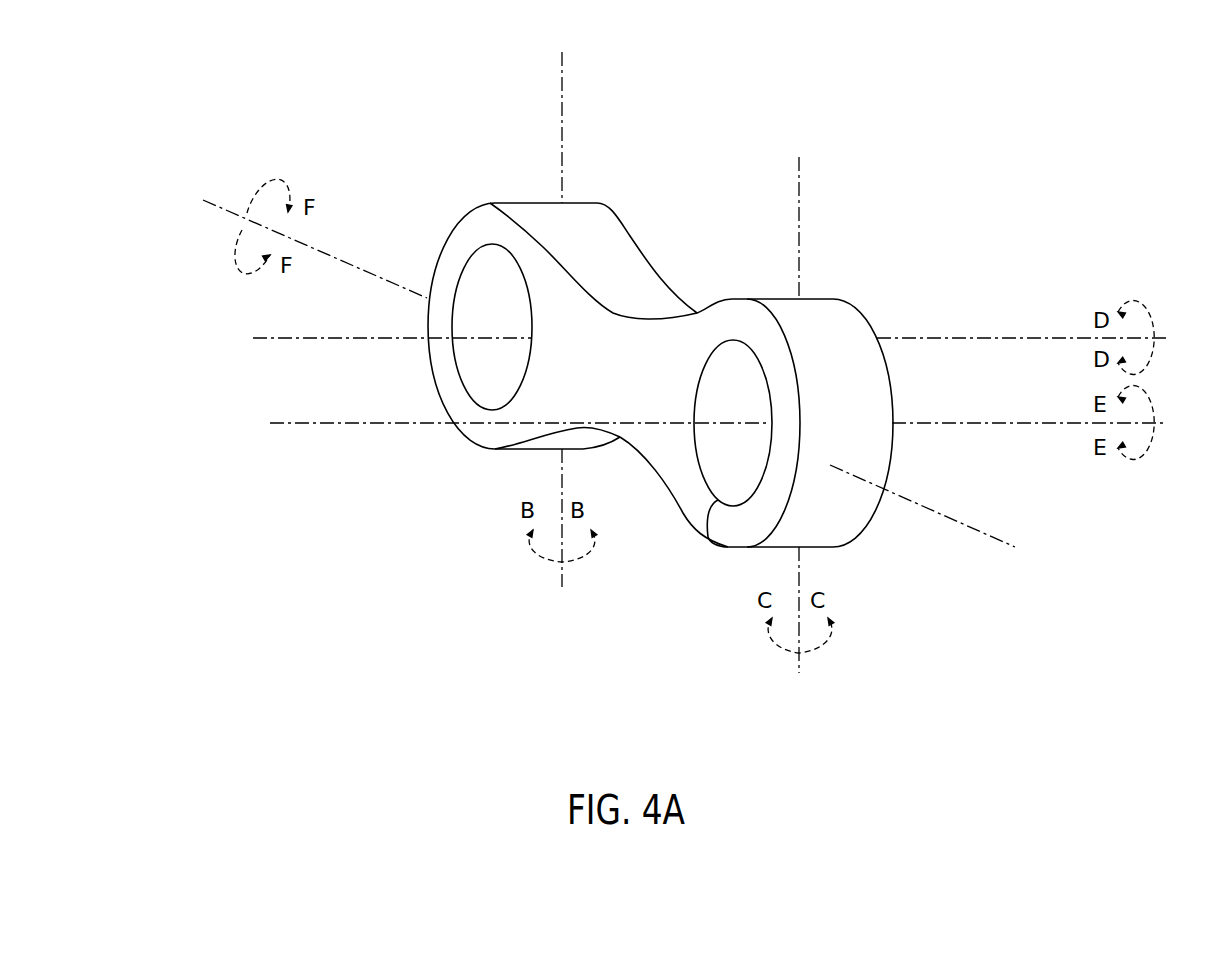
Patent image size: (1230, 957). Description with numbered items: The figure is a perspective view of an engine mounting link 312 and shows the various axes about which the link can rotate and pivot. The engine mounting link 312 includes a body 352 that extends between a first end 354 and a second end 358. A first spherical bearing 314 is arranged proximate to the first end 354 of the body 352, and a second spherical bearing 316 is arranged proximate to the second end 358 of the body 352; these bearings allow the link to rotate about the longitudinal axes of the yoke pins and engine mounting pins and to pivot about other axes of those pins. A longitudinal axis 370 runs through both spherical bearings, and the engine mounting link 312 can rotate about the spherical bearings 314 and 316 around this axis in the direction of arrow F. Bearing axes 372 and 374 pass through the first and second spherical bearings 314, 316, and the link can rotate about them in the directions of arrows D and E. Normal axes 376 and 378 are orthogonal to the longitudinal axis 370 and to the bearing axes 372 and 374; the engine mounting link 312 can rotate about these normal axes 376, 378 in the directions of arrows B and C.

The engine mounting link 312 is at (631, 198).
The first spherical bearing 314 is at (533, 325).
The second spherical bearing 316 is at (707, 537).
The body 352 is at (648, 293).
The first end 354 is at (437, 267).
The second end 358 is at (868, 450).
The longitudinal axis 370 is at (618, 373).
The bearing axis 372 is at (711, 337).
The bearing axis 374 is at (716, 422).
The normal axis 376 is at (561, 319).
The normal axis 378 is at (798, 420).